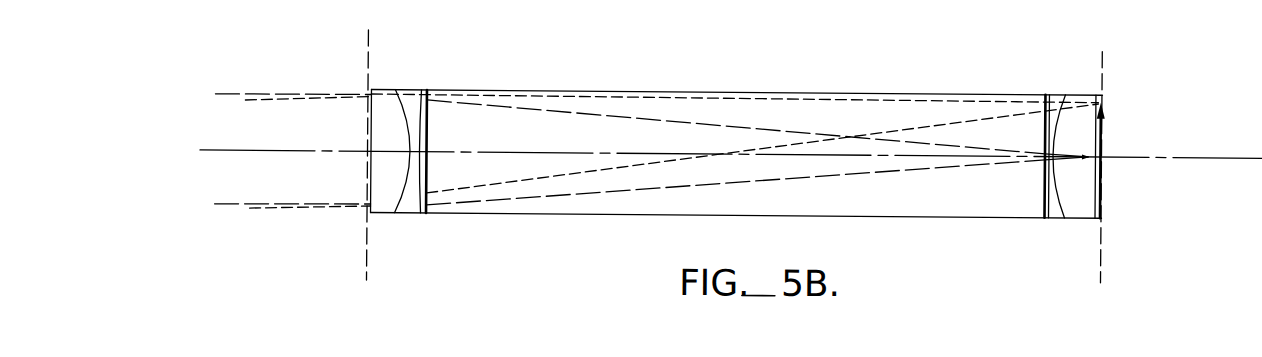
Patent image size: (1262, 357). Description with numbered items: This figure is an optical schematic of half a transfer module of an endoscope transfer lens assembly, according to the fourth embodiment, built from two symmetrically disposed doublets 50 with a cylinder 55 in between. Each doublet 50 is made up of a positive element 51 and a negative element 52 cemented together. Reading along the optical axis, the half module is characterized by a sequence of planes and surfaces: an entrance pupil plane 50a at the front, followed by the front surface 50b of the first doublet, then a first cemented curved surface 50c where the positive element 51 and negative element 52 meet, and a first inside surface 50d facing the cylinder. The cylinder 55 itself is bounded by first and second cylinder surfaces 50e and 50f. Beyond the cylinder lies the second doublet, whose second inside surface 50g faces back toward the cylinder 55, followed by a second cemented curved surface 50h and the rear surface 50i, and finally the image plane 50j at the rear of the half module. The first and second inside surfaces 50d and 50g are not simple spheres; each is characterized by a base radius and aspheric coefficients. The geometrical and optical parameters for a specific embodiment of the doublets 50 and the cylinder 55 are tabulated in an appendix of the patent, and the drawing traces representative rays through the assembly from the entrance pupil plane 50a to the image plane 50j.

The doublet 50 is at (733, 165).
The entrance pupil plane 50a is at (366, 252).
The front surface 50b is at (372, 193).
The first cemented curved surface 50c is at (402, 194).
The first inside surface 50d is at (428, 178).
The first cylinder surface 50e is at (500, 178).
The second cylinder surface 50f is at (1044, 196).
The second inside surface 50g is at (1050, 215).
The second cemented curved surface 50h is at (1068, 203).
The rear surface 50i is at (1092, 214).
The image plane 50j is at (1163, 264).
The positive element 51 is at (413, 160).
The negative element 52 is at (465, 151).
The cylinder 55 is at (717, 86).